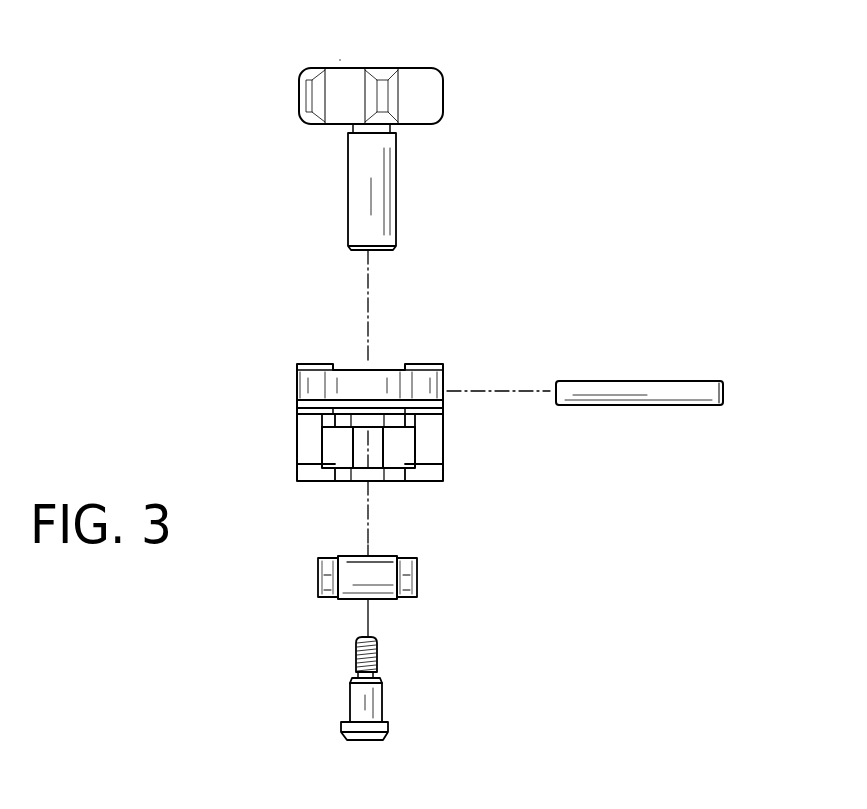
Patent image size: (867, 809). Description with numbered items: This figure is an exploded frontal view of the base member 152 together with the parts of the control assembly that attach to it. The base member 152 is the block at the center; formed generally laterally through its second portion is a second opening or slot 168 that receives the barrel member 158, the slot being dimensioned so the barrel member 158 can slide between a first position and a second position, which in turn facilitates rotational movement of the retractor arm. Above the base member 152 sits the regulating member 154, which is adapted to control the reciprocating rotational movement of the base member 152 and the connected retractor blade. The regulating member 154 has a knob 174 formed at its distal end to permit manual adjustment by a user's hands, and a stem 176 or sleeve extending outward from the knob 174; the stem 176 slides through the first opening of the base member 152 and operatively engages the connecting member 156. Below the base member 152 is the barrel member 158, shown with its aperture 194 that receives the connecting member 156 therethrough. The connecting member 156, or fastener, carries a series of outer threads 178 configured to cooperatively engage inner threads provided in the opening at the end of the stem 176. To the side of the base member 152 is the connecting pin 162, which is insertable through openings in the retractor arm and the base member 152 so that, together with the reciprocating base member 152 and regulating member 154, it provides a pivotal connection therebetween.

The base member 152 is at (297, 420).
The regulating member 154 is at (288, 178).
The connecting member 156 is at (373, 705).
The barrel member 158 is at (417, 577).
The connecting pin 162 is at (617, 388).
The second opening 168 is at (428, 444).
The knob 174 is at (418, 82).
The stem 176 is at (388, 184).
The outer threads 178 is at (378, 655).
The aperture 194 is at (355, 600).